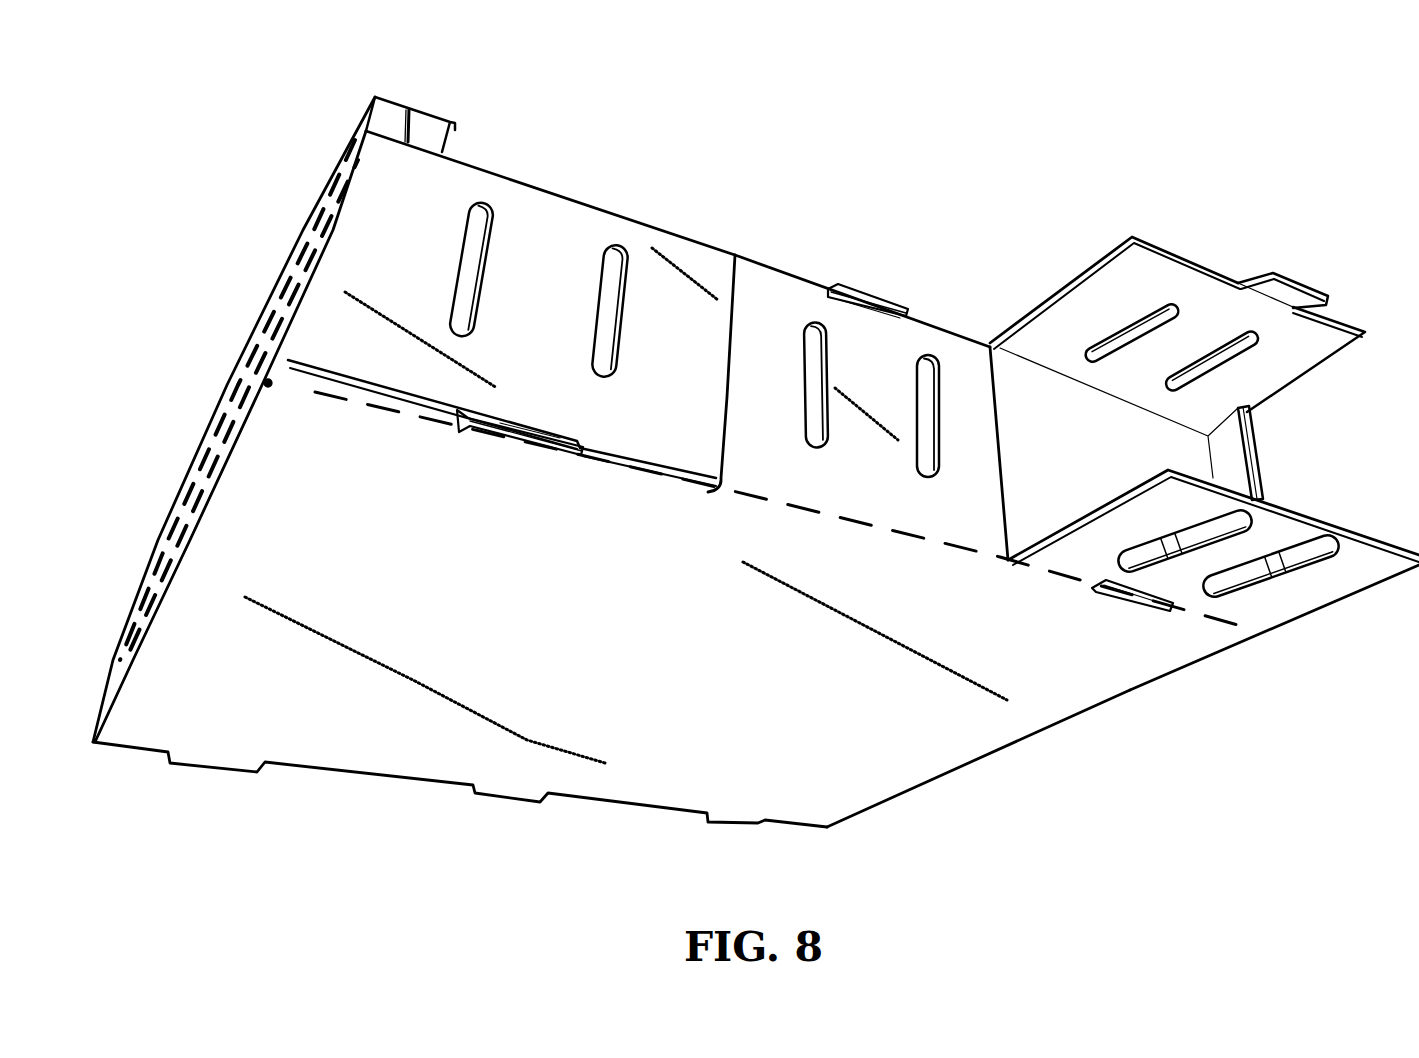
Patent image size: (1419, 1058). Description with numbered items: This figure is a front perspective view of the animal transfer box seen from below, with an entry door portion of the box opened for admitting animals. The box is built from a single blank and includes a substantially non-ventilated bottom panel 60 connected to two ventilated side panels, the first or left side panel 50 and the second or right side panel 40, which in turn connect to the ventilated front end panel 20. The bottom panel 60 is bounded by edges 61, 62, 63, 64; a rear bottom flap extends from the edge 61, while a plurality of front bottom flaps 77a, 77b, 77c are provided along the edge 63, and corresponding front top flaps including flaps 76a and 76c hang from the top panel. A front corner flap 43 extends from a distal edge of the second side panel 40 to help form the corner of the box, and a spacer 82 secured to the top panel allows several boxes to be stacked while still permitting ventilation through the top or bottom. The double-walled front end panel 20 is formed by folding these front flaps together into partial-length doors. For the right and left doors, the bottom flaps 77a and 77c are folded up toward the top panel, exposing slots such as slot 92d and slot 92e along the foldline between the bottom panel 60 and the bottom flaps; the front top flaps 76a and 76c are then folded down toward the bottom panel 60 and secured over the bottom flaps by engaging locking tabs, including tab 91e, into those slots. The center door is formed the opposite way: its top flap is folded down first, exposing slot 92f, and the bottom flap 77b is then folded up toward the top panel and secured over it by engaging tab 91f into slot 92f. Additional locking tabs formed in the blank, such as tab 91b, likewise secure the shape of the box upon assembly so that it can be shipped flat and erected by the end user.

The front end panel 20 is at (788, 261).
The second side panel 40 is at (1040, 757).
The front corner flap 43 is at (1262, 462).
The first side panel 50 is at (183, 446).
The bottom panel 60 is at (622, 655).
The edge 61 is at (362, 770).
The edge 62 is at (177, 563).
The edge 63 is at (872, 525).
The edge 64 is at (935, 780).
The front top flap 76a is at (563, 285).
The front top flap 76c is at (1143, 268).
The front bottom flap 77a is at (646, 489).
The front bottom flap 77b is at (906, 389).
The front bottom flap 77c is at (1348, 567).
The spacer 82 is at (390, 118).
The locking tab 91b is at (1301, 261).
The locking tab 91e is at (516, 398).
The locking tab 91f is at (844, 311).
The slot 92d is at (1096, 597).
The slot 92e is at (543, 457).
The slot 92f is at (887, 276).